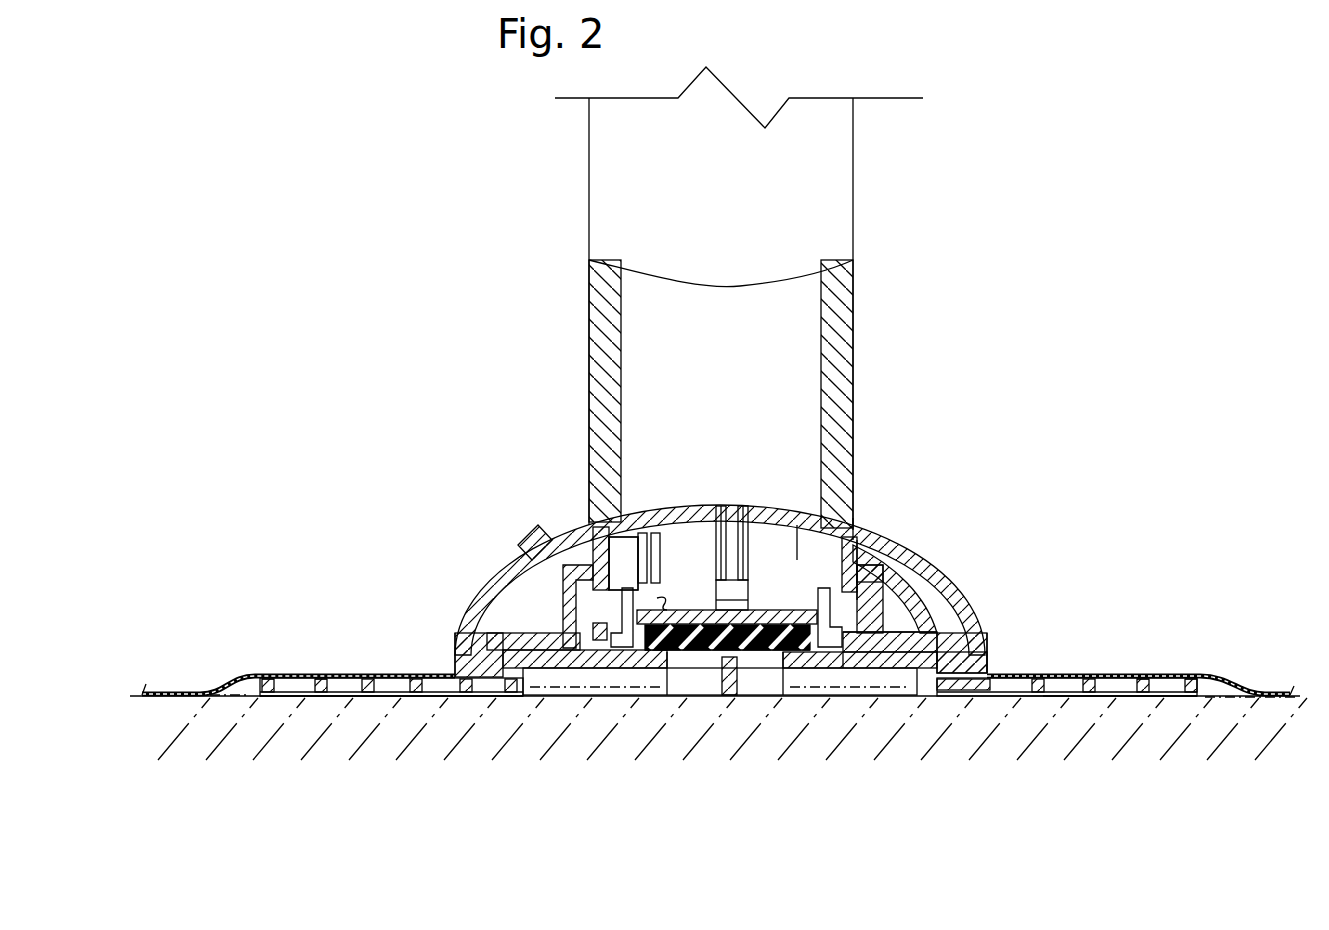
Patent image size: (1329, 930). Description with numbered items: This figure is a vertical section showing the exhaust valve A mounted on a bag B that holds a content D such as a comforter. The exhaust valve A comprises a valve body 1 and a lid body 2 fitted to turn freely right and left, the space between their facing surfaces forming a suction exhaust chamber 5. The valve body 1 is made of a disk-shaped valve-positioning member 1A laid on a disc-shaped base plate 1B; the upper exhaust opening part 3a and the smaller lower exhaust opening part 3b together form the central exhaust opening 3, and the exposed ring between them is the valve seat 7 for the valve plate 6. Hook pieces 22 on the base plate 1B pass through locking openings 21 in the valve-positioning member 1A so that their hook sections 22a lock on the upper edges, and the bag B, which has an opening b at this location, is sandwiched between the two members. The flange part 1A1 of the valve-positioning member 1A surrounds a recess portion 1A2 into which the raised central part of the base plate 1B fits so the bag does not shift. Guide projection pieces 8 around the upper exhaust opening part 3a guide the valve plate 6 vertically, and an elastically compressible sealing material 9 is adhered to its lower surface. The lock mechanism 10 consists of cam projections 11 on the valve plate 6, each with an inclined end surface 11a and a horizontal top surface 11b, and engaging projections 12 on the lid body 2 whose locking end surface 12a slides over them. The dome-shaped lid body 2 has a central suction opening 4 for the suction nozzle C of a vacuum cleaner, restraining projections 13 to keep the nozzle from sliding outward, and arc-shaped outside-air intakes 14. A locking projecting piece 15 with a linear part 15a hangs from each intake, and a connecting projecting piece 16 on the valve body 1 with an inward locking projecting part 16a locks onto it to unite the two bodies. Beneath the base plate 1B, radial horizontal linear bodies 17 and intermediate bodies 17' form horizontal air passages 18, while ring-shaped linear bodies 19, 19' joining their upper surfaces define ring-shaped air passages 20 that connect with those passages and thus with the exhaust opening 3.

The valve body 1 is at (395, 543).
The valve-positioning member 1A is at (530, 625).
The base plate 1B is at (492, 648).
The flange part 1A1 is at (990, 662).
The circular-shaped recess portion 1A2 is at (935, 562).
The lid body 2 is at (883, 558).
The exhaust opening 3 is at (640, 812).
The upper exhaust opening part 3a is at (668, 652).
The lower exhaust opening part 3b is at (695, 652).
The suction opening 4 is at (685, 522).
The suction exhaust chamber 5 is at (797, 524).
The valve plate 6 is at (790, 624).
The valve seat 7 is at (780, 660).
The guide projection pieces 8 is at (818, 600).
The sealing material 9 is at (760, 698).
The lock mechanism 10 is at (773, 400).
The cam projections 11 is at (760, 525).
The inclined end surface 11a is at (715, 600).
The horizontal top surface 11b is at (733, 578).
The engaging projections 12 is at (738, 525).
The locking end surface 12a is at (733, 578).
The restraining projections 13 is at (527, 555).
The outside-air intakes 14 is at (865, 540).
The locking projecting piece 15 is at (840, 558).
The locking projecting linear part 15a is at (880, 667).
The connecting projecting piece 16 is at (895, 590).
The locking projecting part 16a is at (910, 560).
The horizontal linear bodies 17 is at (728, 753).
The horizontal linear body 17' is at (391, 743).
The horizontal air passages 18 is at (1123, 697).
The ring-shaped linear body 19 is at (737, 625).
The ring-shaped linear body 19' is at (745, 623).
The ring-shaped air passages 20 is at (292, 676).
The locking openings 21 is at (575, 655).
The hook pieces 22 is at (622, 650).
The hook sections 22a is at (523, 556).
The exhaust valve A is at (962, 500).
The bag B is at (1208, 678).
The suction nozzle C is at (853, 218).
The content D is at (1187, 735).
The opening b is at (845, 656).